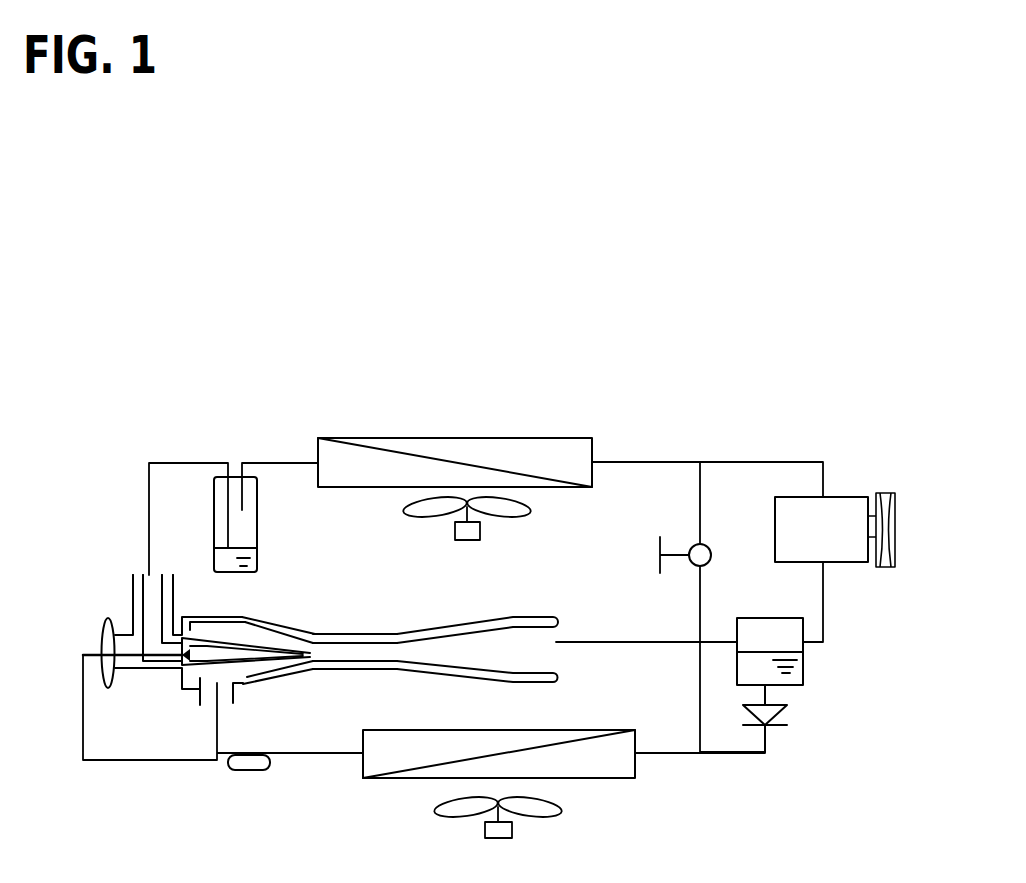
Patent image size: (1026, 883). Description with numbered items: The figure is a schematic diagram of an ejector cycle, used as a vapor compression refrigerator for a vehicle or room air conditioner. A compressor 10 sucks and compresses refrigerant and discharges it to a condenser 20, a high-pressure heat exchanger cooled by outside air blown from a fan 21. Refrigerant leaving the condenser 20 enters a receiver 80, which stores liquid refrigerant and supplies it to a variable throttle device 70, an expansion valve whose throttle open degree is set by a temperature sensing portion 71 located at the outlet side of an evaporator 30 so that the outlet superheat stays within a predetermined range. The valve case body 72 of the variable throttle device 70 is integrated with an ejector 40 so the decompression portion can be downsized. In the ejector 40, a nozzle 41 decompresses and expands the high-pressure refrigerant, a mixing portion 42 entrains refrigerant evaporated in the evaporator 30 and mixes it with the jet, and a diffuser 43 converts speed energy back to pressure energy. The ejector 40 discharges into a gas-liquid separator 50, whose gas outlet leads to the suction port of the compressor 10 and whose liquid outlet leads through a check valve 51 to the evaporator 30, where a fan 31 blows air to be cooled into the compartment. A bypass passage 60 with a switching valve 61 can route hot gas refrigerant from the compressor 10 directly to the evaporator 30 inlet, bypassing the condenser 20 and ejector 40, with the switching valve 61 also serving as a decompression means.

The compressor 10 is at (853, 497).
The condenser 20 is at (545, 437).
The fan 21 is at (530, 505).
The evaporator 30 is at (618, 730).
The fan 31 is at (562, 808).
The ejector 40 is at (336, 655).
The nozzle 41 is at (273, 663).
The mixing portion 42 is at (375, 661).
The diffuser 43 is at (458, 663).
The gas-liquid separator 50 is at (803, 663).
The check valve 51 is at (777, 710).
The bypass passage 60 is at (700, 592).
The switching valve 61 is at (710, 547).
The variable throttle device 70 is at (131, 608).
The temperature sensing portion 71 is at (250, 770).
The valve case body 72 is at (147, 668).
The receiver 80 is at (257, 527).